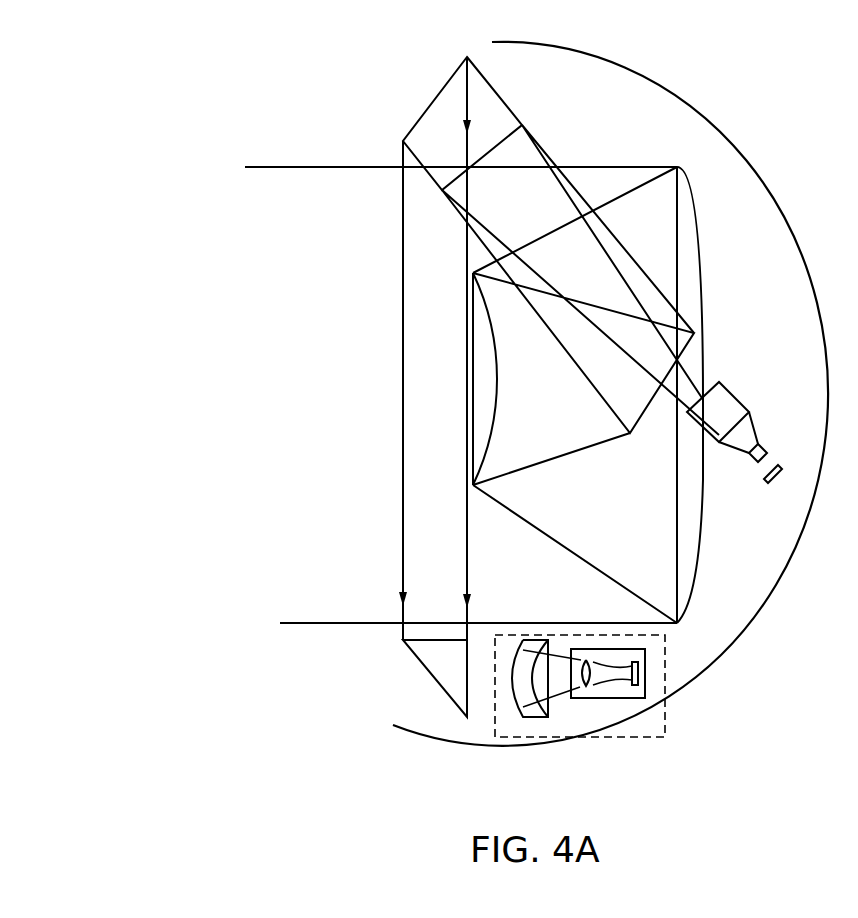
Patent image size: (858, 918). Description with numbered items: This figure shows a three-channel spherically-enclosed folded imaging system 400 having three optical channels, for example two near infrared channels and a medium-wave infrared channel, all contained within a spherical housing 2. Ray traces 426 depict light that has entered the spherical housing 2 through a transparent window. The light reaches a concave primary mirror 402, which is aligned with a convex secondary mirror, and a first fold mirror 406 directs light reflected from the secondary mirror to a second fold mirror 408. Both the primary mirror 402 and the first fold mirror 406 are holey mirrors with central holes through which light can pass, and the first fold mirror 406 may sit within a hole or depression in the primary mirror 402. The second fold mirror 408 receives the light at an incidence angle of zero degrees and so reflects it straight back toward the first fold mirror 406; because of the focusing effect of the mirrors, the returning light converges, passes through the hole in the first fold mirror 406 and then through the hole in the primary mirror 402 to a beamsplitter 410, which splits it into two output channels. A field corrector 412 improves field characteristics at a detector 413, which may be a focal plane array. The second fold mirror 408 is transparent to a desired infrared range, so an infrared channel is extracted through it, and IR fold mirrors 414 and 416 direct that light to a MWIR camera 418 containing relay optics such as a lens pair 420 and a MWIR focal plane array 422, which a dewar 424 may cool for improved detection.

The spherical housing 2 is at (596, 55).
The three-channel spherically-enclosed folded imaging system 400 is at (176, 414).
The concave primary mirror 402 is at (703, 230).
The first fold mirror 406 is at (631, 437).
The second fold mirror 408 is at (523, 127).
The beamsplitter 410 is at (721, 383).
The field corrector 412 is at (762, 448).
The detector 413 is at (775, 484).
The IR fold mirror 414 is at (438, 95).
The IR fold mirror 416 is at (430, 672).
The MWIR camera 418 is at (533, 634).
The lens pair 420 is at (598, 660).
The MWIR focal plane array 422 is at (642, 673).
The dewar 424 is at (634, 698).
The ray traces 426 is at (272, 169).